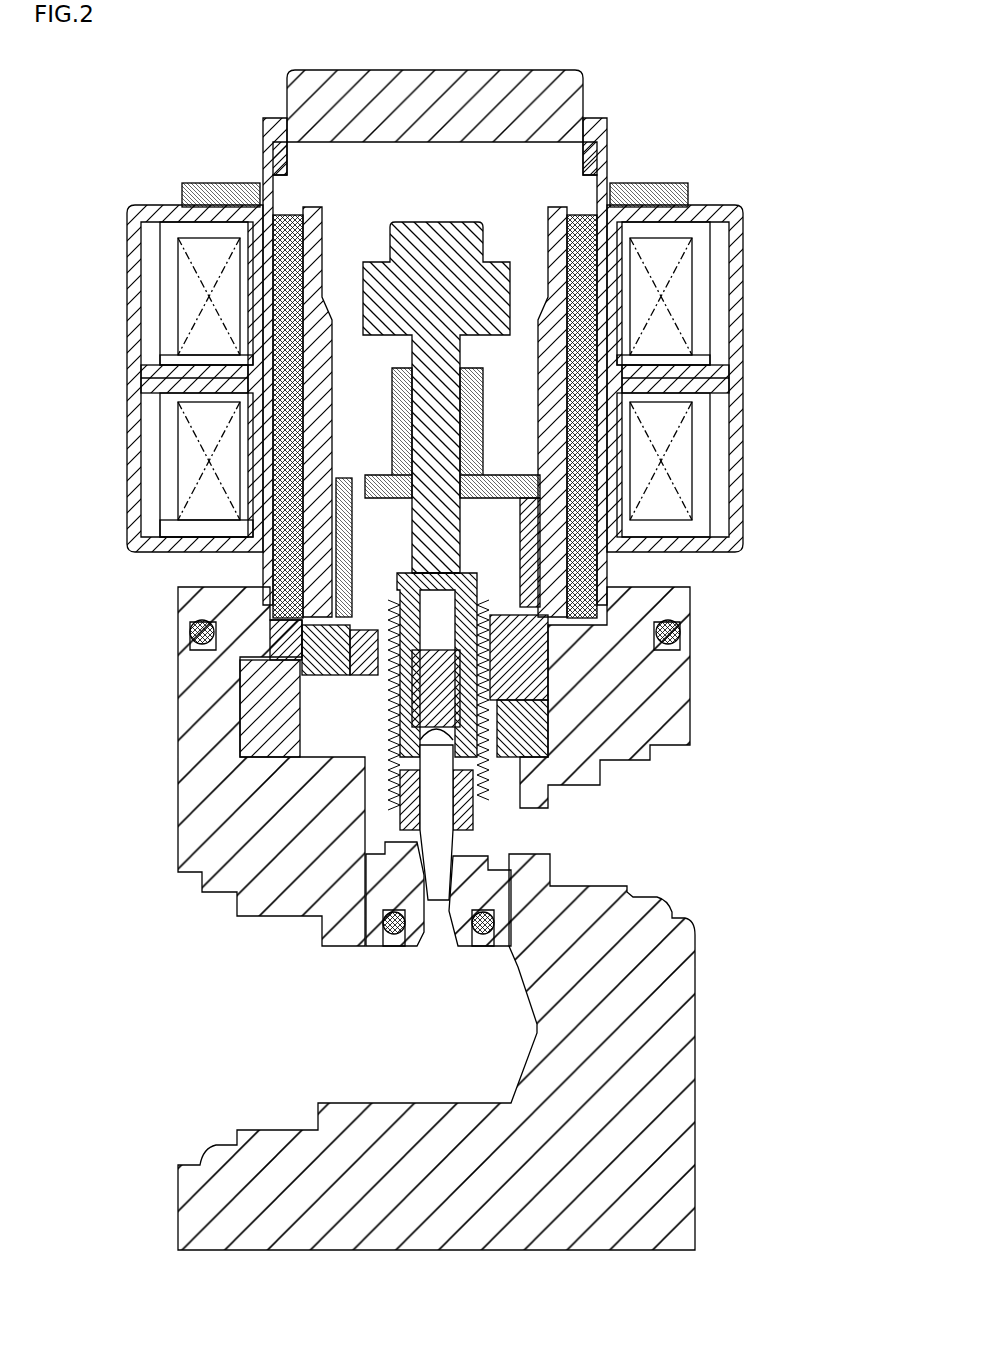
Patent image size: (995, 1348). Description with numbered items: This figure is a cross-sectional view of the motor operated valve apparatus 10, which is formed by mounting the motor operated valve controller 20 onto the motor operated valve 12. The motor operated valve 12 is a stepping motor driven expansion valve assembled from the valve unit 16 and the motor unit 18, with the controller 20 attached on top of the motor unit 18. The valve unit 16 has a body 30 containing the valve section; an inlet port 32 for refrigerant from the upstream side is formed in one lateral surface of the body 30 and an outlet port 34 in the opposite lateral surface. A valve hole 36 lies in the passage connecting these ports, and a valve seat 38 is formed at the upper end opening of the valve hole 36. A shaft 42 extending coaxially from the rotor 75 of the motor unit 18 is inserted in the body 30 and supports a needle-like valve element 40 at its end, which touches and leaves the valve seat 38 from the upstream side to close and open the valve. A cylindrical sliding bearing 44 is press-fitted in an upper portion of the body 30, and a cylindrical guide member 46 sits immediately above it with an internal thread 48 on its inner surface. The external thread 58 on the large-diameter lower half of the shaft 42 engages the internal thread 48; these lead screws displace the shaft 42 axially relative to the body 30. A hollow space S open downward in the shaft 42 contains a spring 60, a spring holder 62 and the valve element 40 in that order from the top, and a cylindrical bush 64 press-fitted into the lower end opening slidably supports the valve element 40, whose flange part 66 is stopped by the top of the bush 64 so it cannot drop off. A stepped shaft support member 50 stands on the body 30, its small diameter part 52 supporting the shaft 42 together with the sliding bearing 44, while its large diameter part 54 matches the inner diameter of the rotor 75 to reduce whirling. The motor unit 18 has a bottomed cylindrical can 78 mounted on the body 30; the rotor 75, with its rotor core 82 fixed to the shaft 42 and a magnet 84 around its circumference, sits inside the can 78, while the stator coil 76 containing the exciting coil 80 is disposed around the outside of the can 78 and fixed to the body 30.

The motor operated valve apparatus 10 is at (698, 99).
The motor operated valve 12 is at (772, 171).
The valve unit 16 is at (755, 628).
The motor unit 18 is at (757, 233).
The motor operated valve controller 20 is at (683, 182).
The body 30 is at (560, 685).
The inlet port 32 is at (668, 828).
The outlet port 34 is at (222, 1003).
The valve hole 36 is at (380, 860).
The valve seat 38 is at (420, 847).
The valve element 40 is at (470, 800).
The shaft 42 is at (530, 498).
The sliding bearing 44 is at (350, 745).
The guide member 46 is at (330, 680).
The internal thread 48 is at (300, 655).
The shaft support member 50 is at (235, 510).
The small diameter part 52 is at (620, 355).
The large diameter part 54 is at (490, 418).
The external thread 58 is at (232, 630).
The spring 60 is at (520, 610).
The spring holder 62 is at (500, 650).
The bush 64 is at (360, 775).
The flange part 66 is at (540, 735).
The rotor 75 is at (183, 190).
The stator coil 76 is at (130, 236).
The can 78 is at (263, 153).
The exciting coil 80 is at (180, 290).
The rotor core 82 is at (235, 352).
The magnet 84 is at (235, 425).
The hollow space S is at (462, 548).